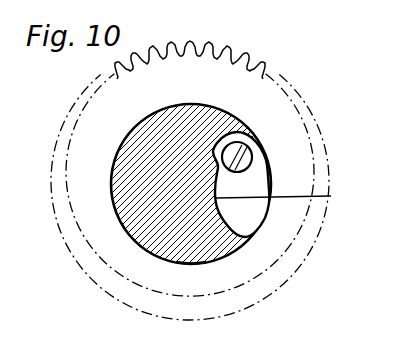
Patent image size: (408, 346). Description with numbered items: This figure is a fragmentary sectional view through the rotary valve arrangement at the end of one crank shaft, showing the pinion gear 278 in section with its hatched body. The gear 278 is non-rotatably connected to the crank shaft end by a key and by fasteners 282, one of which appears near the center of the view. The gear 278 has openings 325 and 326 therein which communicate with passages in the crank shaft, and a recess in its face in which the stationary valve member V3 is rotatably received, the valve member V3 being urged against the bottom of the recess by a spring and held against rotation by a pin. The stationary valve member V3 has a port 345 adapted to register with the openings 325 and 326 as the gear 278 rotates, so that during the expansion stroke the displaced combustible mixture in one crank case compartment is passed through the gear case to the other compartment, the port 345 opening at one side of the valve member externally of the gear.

The gear 278 is at (238, 80).
The opening 325 is at (191, 103).
The opening 326 is at (187, 263).
The fasteners 282 is at (247, 158).
The port 345 is at (289, 198).
The stationary valve member V3 is at (233, 242).